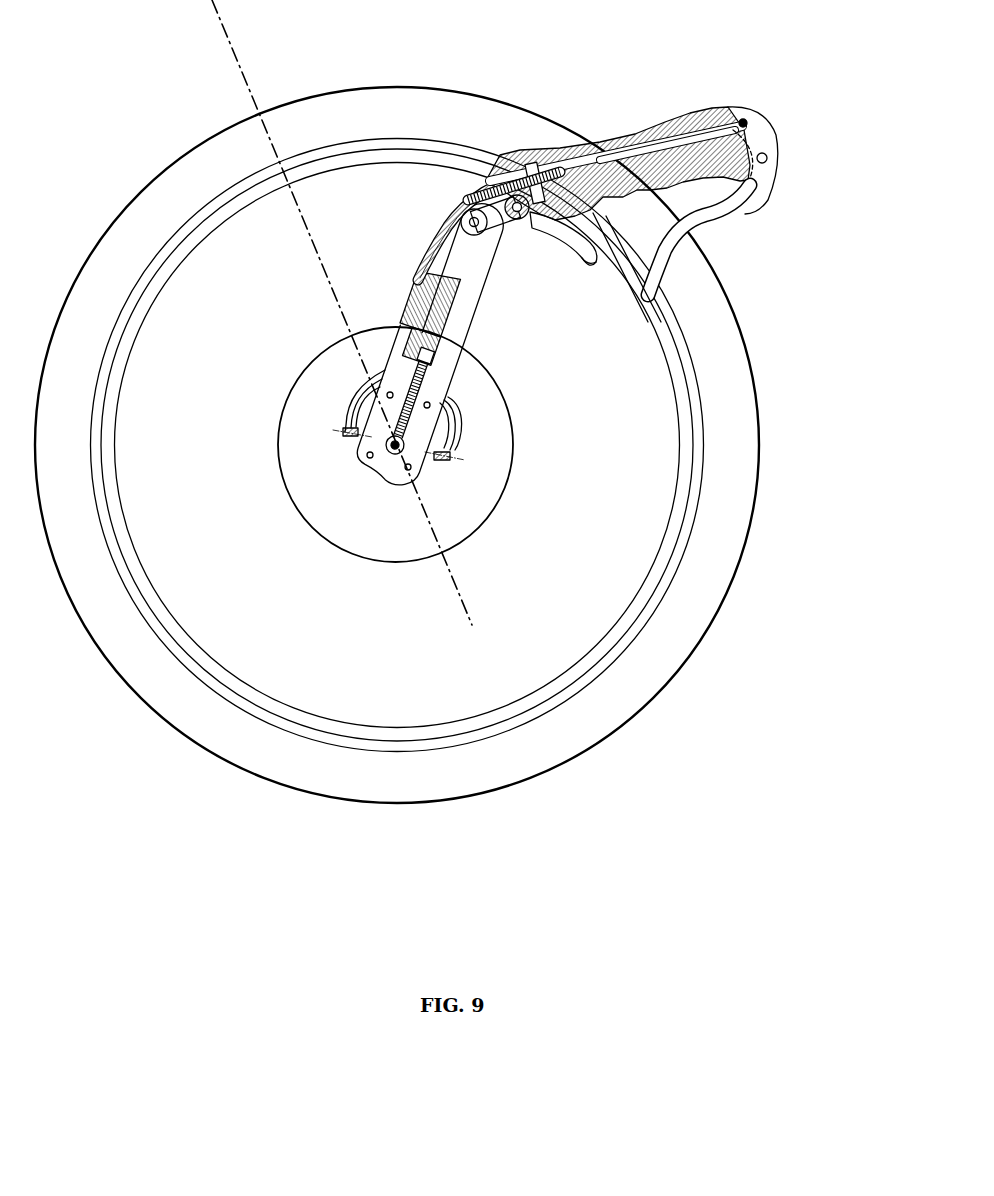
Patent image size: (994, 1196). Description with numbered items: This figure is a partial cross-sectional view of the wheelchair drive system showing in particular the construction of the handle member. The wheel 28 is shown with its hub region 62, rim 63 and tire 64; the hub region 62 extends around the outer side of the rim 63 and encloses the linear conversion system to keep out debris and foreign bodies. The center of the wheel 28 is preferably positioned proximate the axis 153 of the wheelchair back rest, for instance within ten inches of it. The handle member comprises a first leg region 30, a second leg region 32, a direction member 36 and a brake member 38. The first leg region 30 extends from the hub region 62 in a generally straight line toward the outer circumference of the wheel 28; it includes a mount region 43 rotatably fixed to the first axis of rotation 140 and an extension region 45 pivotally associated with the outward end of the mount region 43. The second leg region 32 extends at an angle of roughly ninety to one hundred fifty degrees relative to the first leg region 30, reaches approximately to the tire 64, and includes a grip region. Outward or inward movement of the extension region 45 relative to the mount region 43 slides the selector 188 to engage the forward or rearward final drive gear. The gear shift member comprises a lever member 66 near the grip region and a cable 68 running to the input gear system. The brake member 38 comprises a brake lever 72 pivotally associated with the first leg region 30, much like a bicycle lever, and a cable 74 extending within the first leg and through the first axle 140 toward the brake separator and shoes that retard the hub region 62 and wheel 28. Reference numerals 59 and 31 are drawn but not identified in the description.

The wheel 28 is at (741, 373).
The tire 64 is at (717, 610).
The rim 63 is at (577, 633).
The hub region 62 is at (513, 437).
The axis 153 is at (218, 4).
The mount region 43 is at (450, 360).
The first leg region 30 is at (392, 293).
The direction member 36 is at (432, 207).
The extension region 45 is at (432, 250).
The cable 68 is at (490, 224).
The second leg region 32 is at (700, 110).
The slide rod 59 is at (630, 133).
The cable 74 is at (472, 190).
The brake member 38 is at (812, 174).
The brake lever 72 is at (762, 229).
The lever arm 31 is at (554, 255).
The lever member 66 is at (598, 264).
The first axis of rotation 140 is at (380, 480).
The selector 188 is at (452, 447).